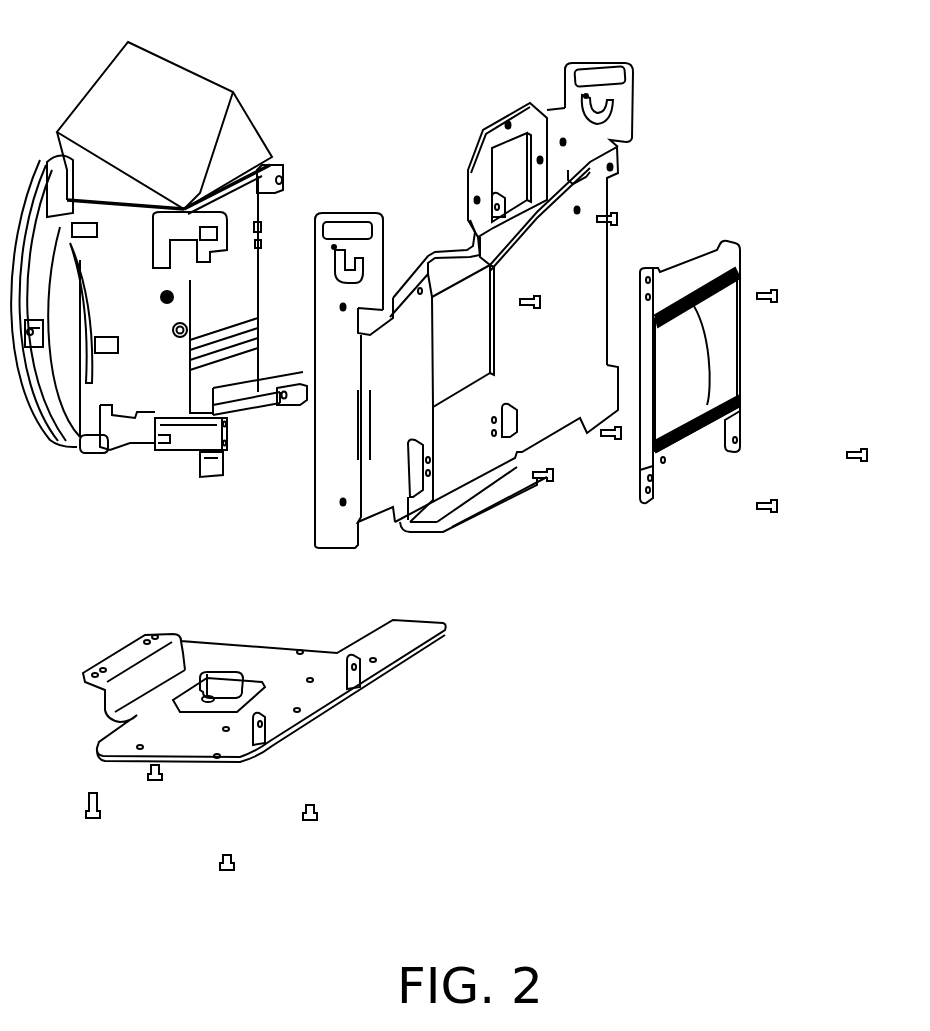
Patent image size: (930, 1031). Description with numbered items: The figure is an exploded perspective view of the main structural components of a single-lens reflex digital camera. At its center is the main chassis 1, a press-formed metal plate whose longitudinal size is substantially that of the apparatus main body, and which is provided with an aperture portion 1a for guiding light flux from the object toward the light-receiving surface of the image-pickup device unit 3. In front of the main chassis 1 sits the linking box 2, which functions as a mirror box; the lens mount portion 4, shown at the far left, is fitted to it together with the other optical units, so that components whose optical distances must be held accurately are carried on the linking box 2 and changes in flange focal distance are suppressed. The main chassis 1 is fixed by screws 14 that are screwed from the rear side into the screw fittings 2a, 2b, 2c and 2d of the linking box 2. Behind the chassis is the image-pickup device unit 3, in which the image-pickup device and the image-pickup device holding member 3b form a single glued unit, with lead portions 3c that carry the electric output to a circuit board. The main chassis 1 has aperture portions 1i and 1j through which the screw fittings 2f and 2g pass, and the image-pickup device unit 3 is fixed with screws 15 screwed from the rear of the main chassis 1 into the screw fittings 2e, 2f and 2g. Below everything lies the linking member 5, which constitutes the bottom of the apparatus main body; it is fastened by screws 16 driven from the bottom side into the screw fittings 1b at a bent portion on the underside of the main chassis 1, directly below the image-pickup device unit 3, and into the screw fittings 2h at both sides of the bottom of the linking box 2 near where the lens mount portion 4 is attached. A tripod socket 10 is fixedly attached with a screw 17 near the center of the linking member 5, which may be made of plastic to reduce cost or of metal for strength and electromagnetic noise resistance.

The main chassis 1 is at (474, 336).
The aperture portion 1a is at (445, 280).
The screw fittings 1b is at (460, 522).
The aperture portion 1i is at (395, 522).
The aperture portion 1j is at (503, 413).
The linking box 2 is at (207, 288).
The screw fitting 2a is at (197, 243).
The screw fitting 2b is at (224, 422).
The screw fitting 2c is at (285, 172).
The screw fitting 2d is at (272, 403).
The screw fitting 2e is at (262, 228).
The screw fitting 2f is at (207, 477).
The screw fitting 2g is at (304, 405).
The screw fittings 2h is at (88, 453).
The image-pickup device unit 3 is at (690, 375).
The image-pickup device holding member 3b is at (653, 482).
The lead portions 3c is at (687, 448).
The lens mount portion 4 is at (40, 190).
The linking member 5 is at (264, 673).
The tripod socket 10 is at (227, 678).
The screws 14 is at (535, 300).
The screws 15 is at (763, 500).
The screws 16 is at (303, 813).
The screw 17 is at (207, 673).